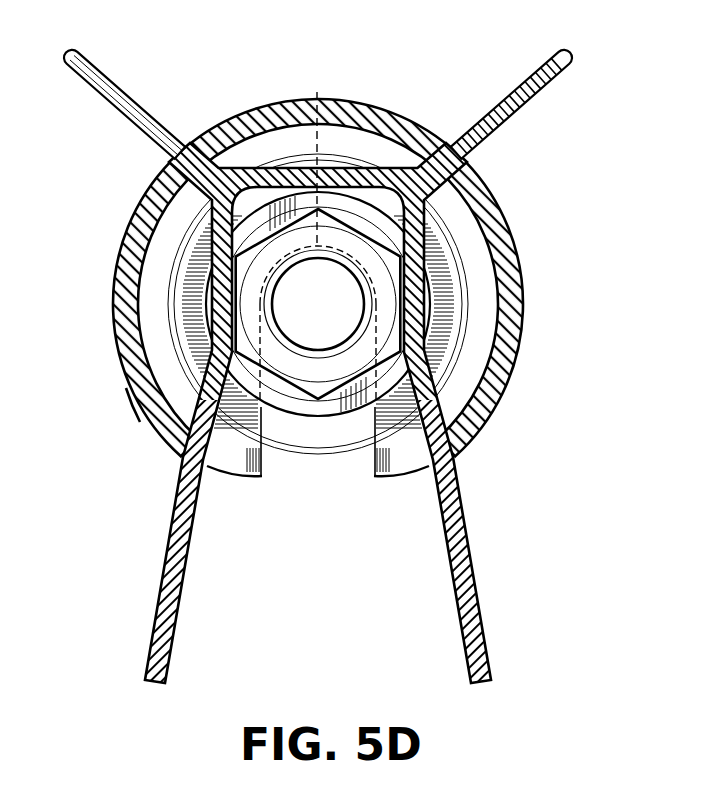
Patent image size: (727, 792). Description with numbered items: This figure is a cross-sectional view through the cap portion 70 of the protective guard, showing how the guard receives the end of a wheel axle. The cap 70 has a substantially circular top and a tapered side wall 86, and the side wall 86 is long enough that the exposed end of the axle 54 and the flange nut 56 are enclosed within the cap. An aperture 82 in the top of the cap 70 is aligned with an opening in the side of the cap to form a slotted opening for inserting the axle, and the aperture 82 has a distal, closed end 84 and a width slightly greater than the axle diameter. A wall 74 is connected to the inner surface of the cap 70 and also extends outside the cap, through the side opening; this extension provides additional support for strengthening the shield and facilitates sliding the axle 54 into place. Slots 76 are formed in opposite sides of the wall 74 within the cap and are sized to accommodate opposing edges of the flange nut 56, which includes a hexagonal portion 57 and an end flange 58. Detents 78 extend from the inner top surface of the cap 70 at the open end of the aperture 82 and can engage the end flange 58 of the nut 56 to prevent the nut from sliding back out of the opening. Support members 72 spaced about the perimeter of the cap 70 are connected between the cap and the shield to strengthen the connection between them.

The cap portion 70 is at (230, 114).
The support members 72 is at (107, 112).
The wall 74 is at (371, 174).
The slots 76 is at (214, 230).
The detents 78 is at (234, 452).
The aperture 82 is at (314, 462).
The closed end 84 is at (318, 93).
The side wall 86 is at (142, 420).
The hexagonal portion 57 is at (380, 272).
The end flange 58 is at (205, 288).
The flange nut 56 is at (196, 313).
The rear wheel axle 54 is at (340, 325).